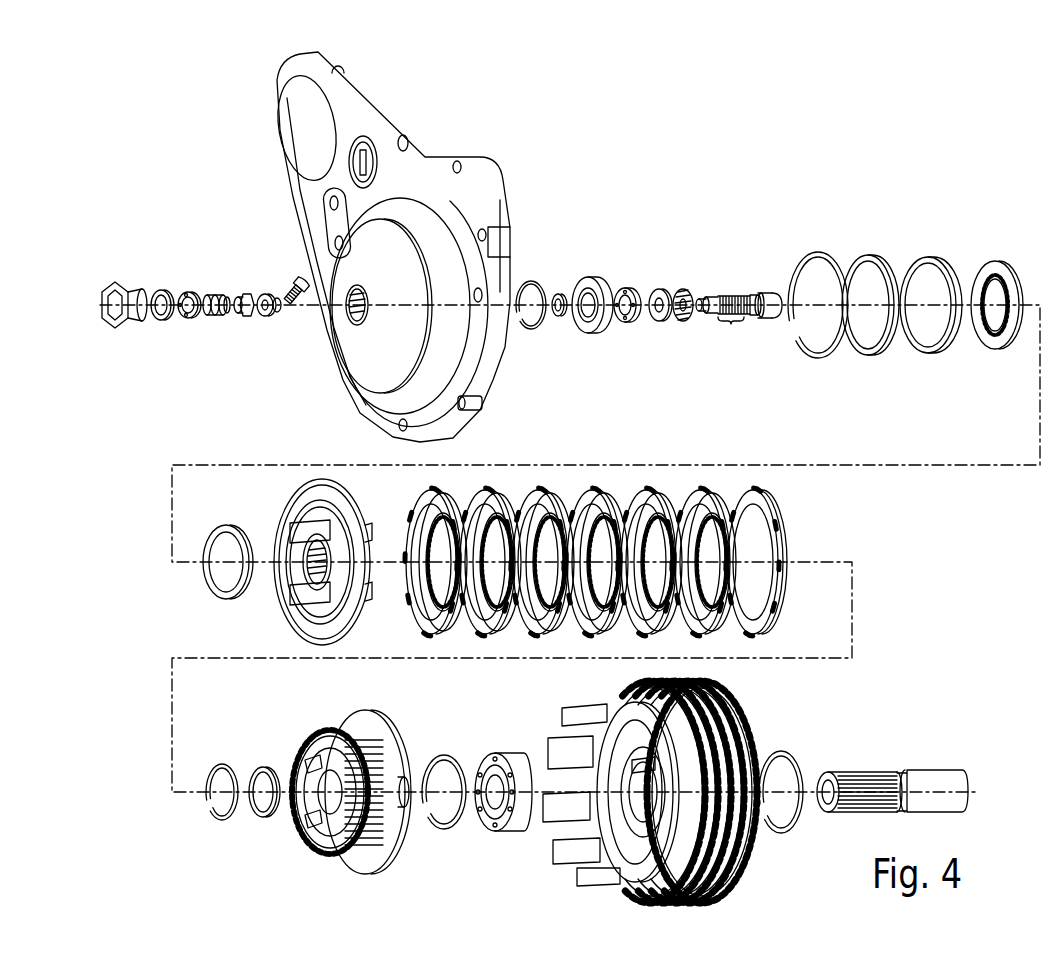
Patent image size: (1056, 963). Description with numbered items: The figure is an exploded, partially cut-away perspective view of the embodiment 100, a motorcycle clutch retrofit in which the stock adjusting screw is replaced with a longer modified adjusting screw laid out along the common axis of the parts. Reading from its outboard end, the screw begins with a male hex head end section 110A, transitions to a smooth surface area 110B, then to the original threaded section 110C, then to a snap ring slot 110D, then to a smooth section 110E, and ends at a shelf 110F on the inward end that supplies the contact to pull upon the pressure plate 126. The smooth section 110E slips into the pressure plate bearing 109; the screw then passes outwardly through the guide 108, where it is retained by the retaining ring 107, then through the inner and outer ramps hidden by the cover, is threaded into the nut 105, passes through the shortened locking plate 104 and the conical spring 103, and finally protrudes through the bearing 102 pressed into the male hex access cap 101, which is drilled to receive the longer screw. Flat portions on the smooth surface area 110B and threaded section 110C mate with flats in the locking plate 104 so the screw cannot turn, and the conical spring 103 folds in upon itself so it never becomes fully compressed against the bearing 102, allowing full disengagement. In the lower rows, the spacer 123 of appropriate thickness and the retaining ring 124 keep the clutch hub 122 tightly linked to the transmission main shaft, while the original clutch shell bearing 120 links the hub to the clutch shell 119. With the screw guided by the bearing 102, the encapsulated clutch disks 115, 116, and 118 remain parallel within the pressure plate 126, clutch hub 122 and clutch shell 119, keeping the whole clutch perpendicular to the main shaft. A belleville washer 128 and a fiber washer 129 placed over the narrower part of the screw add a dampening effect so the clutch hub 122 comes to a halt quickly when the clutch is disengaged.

The embodiment 100 is at (738, 226).
The hex access cap 101 is at (117, 280).
The bearing 102 is at (207, 268).
The conical spring 103 is at (217, 317).
The locking plate 104 is at (245, 317).
The nut 105 is at (266, 292).
The retaining ring 107 is at (557, 293).
The guide 108 is at (599, 279).
The pressure plate bearing 109 is at (627, 322).
The male hex head end section 110A is at (702, 312).
The smooth surface area 110B is at (708, 300).
The threaded section 110C is at (733, 321).
The snap ring slot 110D is at (752, 319).
The smooth section 110E is at (756, 296).
The shelf 110F is at (769, 292).
The clutch disk 115 is at (770, 620).
The clutch disk 116 is at (723, 628).
The clutch disk 118 is at (620, 628).
The clutch shell 119 is at (736, 712).
The clutch shell bearing 120 is at (505, 755).
The clutch hub 122 is at (362, 712).
The spacer 123 is at (259, 767).
The retaining ring 124 is at (223, 765).
The pressure plate 126 is at (282, 515).
The belleville washer 128 is at (660, 289).
The fiber washer 129 is at (683, 321).